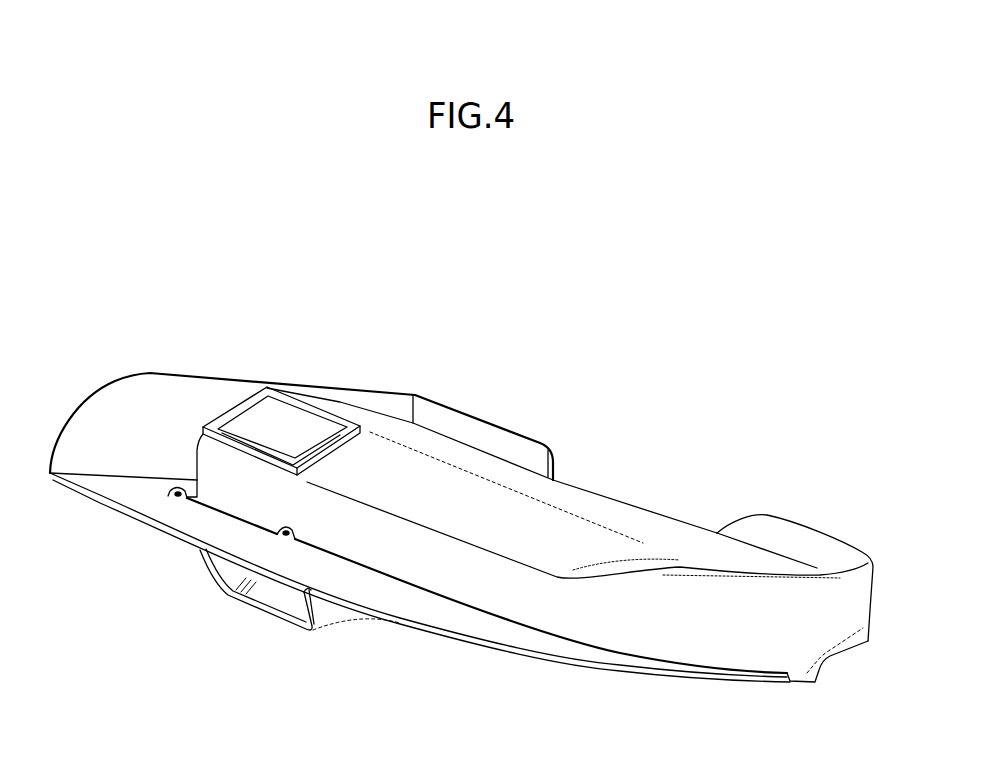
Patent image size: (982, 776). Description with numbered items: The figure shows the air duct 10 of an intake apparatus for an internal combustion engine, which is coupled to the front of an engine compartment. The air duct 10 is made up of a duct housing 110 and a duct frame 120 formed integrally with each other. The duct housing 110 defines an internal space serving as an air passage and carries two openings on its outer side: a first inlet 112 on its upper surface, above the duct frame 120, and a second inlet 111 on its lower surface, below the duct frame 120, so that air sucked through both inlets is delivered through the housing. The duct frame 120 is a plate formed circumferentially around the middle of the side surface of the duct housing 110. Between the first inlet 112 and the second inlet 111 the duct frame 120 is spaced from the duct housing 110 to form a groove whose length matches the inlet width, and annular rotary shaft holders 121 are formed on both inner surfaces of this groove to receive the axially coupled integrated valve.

The air duct 10 is at (556, 265).
The duct housing 110 is at (610, 518).
The second inlet 111 is at (273, 592).
The first inlet 112 is at (275, 423).
The duct frame 120 is at (467, 623).
The rotary shaft holders 121 is at (283, 535).